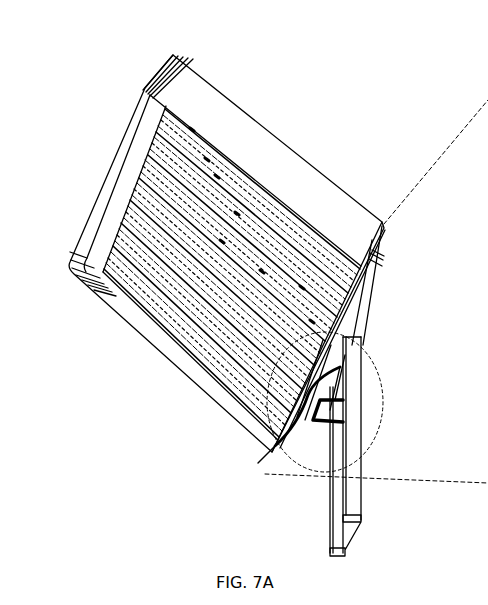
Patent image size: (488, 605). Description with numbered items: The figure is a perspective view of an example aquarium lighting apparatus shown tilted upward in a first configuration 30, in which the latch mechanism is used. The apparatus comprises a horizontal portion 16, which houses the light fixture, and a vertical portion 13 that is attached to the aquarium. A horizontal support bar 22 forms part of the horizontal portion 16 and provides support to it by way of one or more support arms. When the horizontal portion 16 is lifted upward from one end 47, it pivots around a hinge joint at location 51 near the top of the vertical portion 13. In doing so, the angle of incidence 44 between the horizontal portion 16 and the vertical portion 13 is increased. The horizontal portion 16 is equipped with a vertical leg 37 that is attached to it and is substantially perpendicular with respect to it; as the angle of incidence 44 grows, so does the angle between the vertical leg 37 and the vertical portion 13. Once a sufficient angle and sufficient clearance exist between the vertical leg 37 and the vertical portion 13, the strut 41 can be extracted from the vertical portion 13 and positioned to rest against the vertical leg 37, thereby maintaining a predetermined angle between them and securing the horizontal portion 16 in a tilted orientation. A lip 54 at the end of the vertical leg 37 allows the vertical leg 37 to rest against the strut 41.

The first configuration 30 is at (253, 49).
The end of horizontal portion 47 is at (90, 178).
The horizontal portion 16 is at (270, 147).
The horizontal support bar 22 is at (375, 258).
The hinge joint location 51 is at (370, 353).
The vertical leg 37 is at (320, 383).
The strut 41 is at (344, 404).
The lip 54 is at (292, 427).
The angle of incidence 44 is at (292, 513).
The vertical portion 13 is at (350, 501).